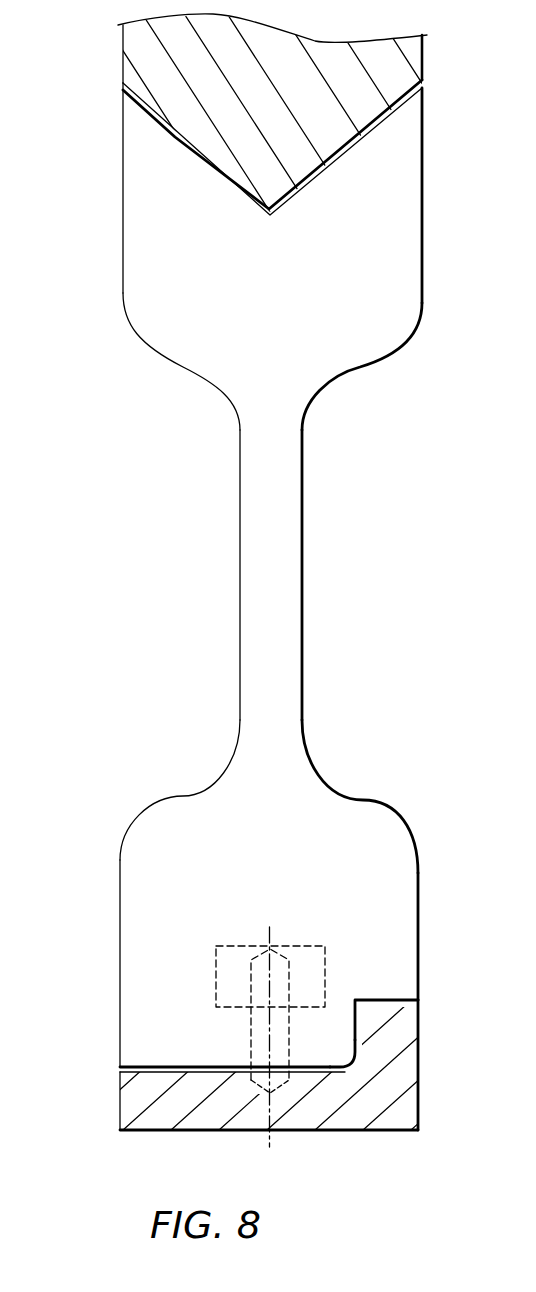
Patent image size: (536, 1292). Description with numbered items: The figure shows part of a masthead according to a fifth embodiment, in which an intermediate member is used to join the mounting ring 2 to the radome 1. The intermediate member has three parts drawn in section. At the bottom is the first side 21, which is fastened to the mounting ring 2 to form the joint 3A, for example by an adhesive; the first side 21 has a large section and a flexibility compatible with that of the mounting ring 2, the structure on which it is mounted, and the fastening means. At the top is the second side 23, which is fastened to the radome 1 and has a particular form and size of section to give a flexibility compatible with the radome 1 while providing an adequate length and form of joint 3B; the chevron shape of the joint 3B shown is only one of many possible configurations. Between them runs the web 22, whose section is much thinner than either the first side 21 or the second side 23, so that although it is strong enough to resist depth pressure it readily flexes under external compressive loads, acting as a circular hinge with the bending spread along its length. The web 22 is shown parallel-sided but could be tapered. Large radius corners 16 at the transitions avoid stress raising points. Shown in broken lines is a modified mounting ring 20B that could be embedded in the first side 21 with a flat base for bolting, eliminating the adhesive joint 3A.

The radome 1 is at (138, 46).
The joint 3B is at (190, 147).
The second side 23 is at (152, 335).
The web 22 is at (292, 513).
The large radius corners 16 is at (216, 784).
The first side 21 is at (143, 877).
The joint 3A is at (143, 1067).
The modified mounting ring 20B is at (230, 976).
The mounting ring 2 is at (137, 1113).